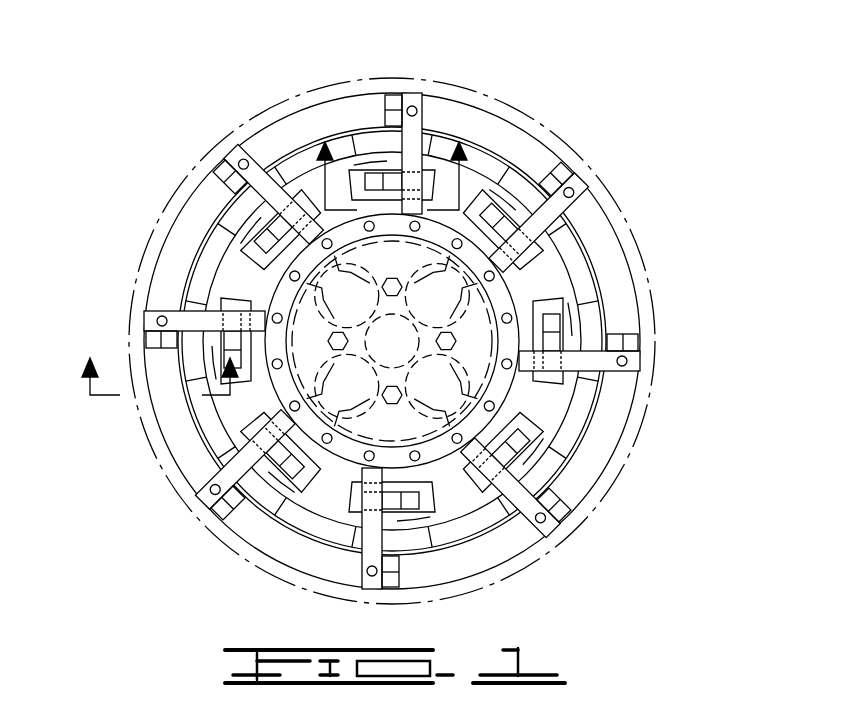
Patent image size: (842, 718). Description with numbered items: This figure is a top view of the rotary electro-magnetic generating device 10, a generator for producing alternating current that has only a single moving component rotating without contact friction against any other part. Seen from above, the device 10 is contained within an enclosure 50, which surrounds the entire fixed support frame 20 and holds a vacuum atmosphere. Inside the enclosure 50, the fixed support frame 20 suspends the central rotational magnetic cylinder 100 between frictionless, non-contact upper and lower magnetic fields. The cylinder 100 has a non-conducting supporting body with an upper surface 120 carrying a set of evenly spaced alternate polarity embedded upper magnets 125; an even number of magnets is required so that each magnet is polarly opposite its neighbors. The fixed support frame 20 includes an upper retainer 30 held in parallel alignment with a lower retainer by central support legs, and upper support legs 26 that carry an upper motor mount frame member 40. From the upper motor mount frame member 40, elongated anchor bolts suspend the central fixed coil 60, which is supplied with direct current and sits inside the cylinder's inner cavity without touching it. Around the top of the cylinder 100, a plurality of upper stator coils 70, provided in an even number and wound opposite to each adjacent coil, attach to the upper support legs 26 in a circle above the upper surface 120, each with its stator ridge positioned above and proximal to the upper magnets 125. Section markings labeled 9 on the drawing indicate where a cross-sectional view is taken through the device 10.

The rotary electro-magnetic generating device 10 is at (510, 64).
The fixed support frame 20 is at (228, 157).
The upper support legs 26 is at (562, 213).
The upper retainer 30 is at (612, 265).
The upper motor mount frame member 40 is at (342, 305).
The enclosure 50 is at (325, 85).
The central fixed coil 60 is at (536, 119).
The upper stator coils 70 is at (260, 488).
The central rotational magnetic cylinder 100 is at (557, 402).
The upper surface 120 is at (463, 495).
The upper magnets 125 is at (540, 423).
The section line 9- 9 is at (394, 159).